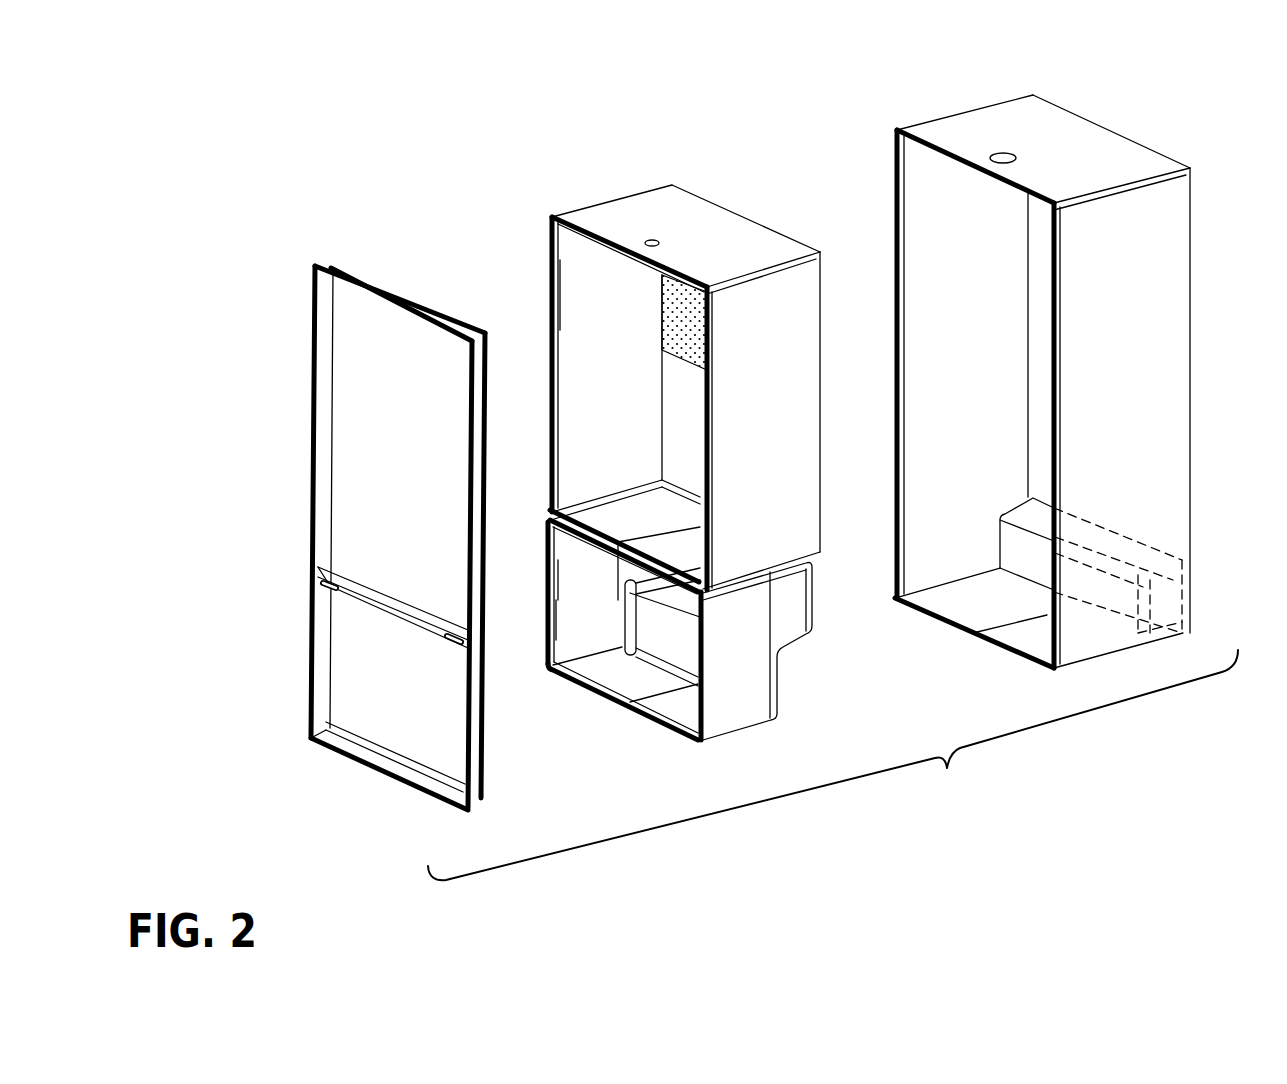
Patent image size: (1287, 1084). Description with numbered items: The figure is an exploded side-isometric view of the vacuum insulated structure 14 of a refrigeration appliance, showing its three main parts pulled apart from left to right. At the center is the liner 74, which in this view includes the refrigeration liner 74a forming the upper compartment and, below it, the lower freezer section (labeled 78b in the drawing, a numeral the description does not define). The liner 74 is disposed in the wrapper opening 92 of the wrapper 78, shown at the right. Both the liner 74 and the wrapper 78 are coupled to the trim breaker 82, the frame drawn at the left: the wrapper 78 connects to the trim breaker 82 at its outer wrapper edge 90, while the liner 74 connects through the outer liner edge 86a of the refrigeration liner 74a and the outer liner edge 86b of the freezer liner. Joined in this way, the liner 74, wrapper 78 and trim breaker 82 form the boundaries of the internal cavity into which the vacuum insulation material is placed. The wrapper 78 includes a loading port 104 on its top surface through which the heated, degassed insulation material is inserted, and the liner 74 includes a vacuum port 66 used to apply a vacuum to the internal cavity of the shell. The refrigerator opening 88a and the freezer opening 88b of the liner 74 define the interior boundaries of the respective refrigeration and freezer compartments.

The vacuum insulated structure 14 is at (833, 765).
The vacuum port 66 is at (654, 240).
The liner 74 is at (655, 336).
The refrigeration liner 74a is at (742, 245).
The wrapper 78 is at (1007, 366).
The lower liner 78b is at (661, 661).
The trim breaker 82 is at (302, 289).
The outer liner edge 86a is at (545, 487).
The outer liner edge 86b is at (545, 563).
The refrigerator opening 88a is at (581, 301).
The freezer opening 88b is at (578, 624).
The outer wrapper edge 90 is at (893, 230).
The wrapper opening 92 is at (940, 510).
The loading port 104 is at (1005, 153).